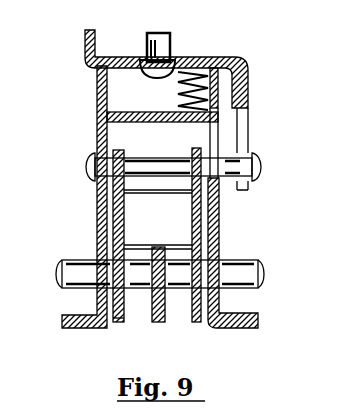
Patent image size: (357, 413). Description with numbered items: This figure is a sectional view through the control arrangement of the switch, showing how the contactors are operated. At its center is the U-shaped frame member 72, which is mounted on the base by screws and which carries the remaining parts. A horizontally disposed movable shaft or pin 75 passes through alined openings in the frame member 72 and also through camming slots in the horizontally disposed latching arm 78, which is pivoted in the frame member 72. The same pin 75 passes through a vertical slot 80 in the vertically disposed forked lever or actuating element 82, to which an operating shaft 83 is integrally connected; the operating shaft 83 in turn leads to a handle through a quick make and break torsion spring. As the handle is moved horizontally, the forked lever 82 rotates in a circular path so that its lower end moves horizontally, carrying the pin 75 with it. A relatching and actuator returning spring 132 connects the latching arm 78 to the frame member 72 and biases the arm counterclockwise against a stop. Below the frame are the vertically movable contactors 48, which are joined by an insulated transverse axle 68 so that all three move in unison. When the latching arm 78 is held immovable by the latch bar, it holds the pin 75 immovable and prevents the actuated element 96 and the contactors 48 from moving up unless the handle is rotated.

The contactor 48 is at (157, 323).
The transverse axle 68 is at (58, 288).
The U-shaped frame member 72 is at (97, 100).
The movable shaft or pin 75 is at (264, 172).
The latching arm 78 is at (150, 124).
The vertical slot 80 is at (248, 136).
The forked lever or actuating element 82 is at (212, 57).
The operating shaft 83 is at (171, 40).
The actuated element 96 is at (114, 323).
The relatching and actuator returning spring 132 is at (249, 80).